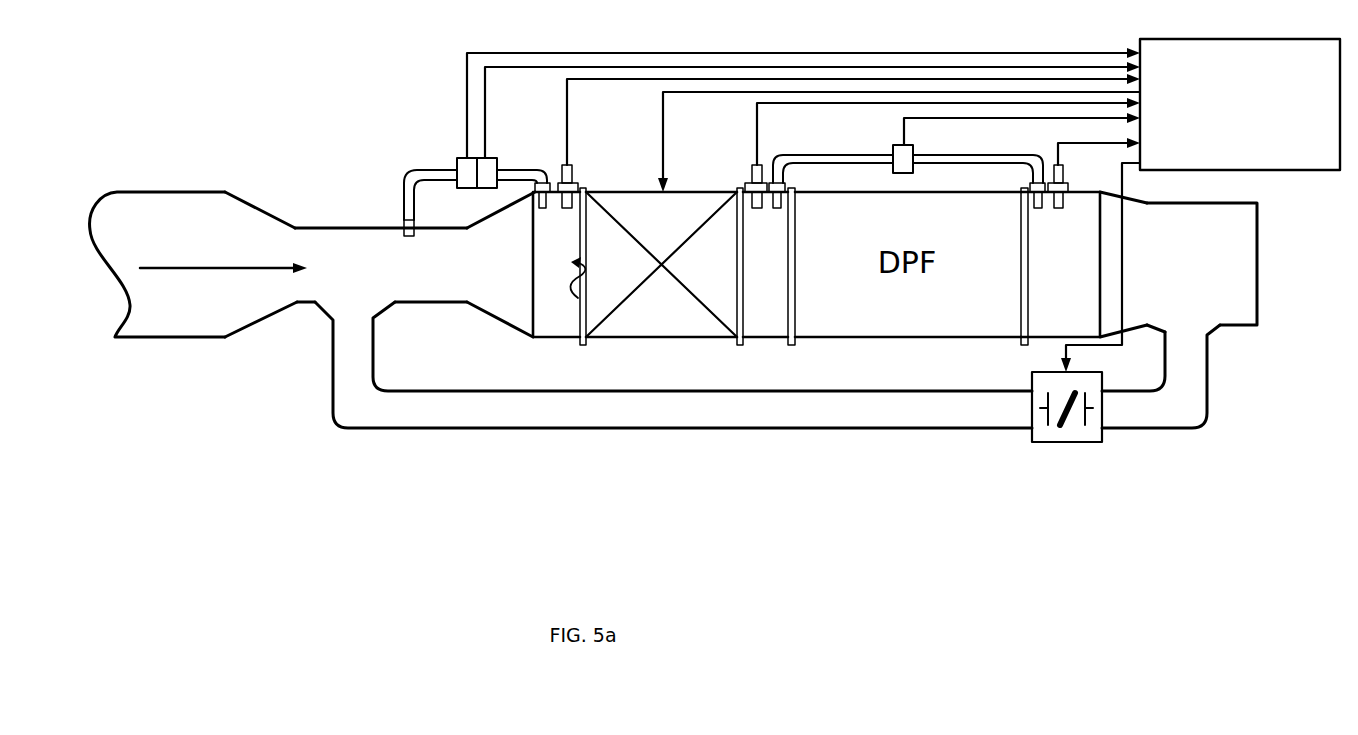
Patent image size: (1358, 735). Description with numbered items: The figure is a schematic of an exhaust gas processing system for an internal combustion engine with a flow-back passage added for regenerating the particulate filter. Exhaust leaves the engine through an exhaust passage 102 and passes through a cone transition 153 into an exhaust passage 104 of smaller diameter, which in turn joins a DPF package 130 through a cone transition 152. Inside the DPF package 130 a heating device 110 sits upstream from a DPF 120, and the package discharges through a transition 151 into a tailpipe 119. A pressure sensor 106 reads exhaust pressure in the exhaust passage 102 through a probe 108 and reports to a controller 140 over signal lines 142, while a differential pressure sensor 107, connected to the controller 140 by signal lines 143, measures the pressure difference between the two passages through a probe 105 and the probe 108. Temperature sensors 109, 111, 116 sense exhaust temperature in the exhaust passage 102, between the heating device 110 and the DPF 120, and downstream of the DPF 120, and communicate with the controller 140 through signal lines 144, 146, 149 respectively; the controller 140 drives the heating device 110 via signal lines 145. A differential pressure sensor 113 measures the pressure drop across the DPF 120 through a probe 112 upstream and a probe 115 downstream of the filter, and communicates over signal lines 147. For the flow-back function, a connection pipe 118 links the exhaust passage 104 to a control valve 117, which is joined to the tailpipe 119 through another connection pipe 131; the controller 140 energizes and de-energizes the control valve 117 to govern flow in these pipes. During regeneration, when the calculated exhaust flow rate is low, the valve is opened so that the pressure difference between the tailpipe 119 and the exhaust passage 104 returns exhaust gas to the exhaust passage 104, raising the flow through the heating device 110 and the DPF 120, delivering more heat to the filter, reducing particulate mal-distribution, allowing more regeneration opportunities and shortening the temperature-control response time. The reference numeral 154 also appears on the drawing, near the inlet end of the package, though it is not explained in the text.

The exhaust passage 102 is at (177, 338).
The exhaust passage 104 is at (347, 228).
The probe 105 is at (420, 177).
The pressure sensor 106 is at (466, 160).
The differential pressure sensor 107 is at (487, 190).
The probe 108 is at (545, 183).
The temperature sensor 109 is at (573, 170).
The heating device 110 is at (577, 300).
The temperature sensor 111 is at (743, 182).
The probe 112 is at (798, 157).
The differential pressure sensor 113 is at (893, 170).
The probe 115 is at (982, 158).
The temperature sensor 116 is at (1068, 183).
The control valve 117 is at (1032, 380).
The connection pipe 118 is at (922, 390).
The tailpipe 119 is at (1257, 257).
The DPF 120 is at (1028, 265).
The DPF package 130 is at (768, 338).
The connection pipe 131 is at (1207, 407).
The controller 140 is at (1215, 39).
The signal lines 142 is at (466, 68).
The signal lines 143 is at (487, 103).
The signal lines 144 is at (567, 115).
The signal lines 145 is at (663, 133).
The signal lines 146 is at (757, 133).
The signal lines 147 is at (904, 134).
The signal lines 149 is at (1072, 143).
The transition 151 is at (1122, 263).
The cone transition 152 is at (485, 315).
The cone transition 153 is at (250, 205).
The housing inlet section 154 is at (567, 338).